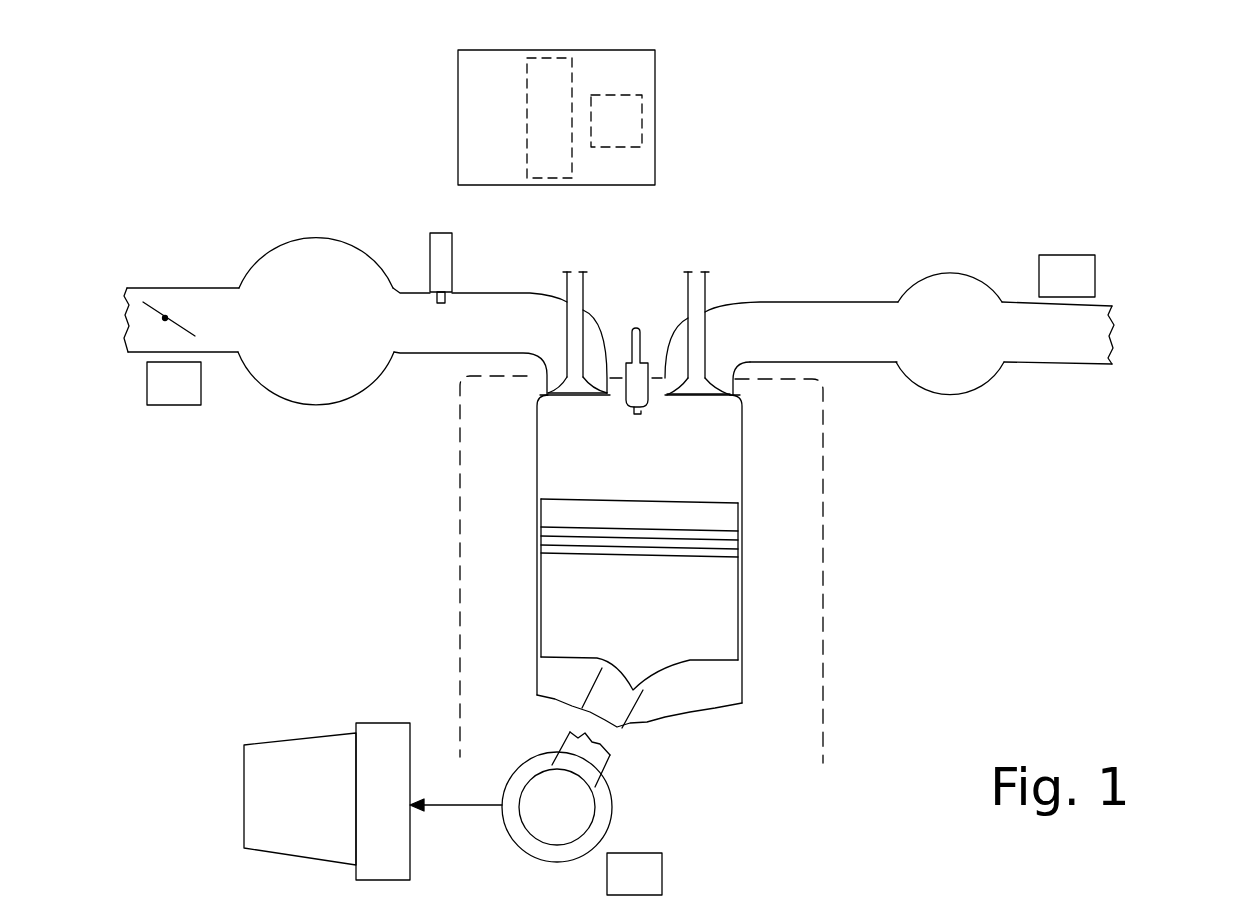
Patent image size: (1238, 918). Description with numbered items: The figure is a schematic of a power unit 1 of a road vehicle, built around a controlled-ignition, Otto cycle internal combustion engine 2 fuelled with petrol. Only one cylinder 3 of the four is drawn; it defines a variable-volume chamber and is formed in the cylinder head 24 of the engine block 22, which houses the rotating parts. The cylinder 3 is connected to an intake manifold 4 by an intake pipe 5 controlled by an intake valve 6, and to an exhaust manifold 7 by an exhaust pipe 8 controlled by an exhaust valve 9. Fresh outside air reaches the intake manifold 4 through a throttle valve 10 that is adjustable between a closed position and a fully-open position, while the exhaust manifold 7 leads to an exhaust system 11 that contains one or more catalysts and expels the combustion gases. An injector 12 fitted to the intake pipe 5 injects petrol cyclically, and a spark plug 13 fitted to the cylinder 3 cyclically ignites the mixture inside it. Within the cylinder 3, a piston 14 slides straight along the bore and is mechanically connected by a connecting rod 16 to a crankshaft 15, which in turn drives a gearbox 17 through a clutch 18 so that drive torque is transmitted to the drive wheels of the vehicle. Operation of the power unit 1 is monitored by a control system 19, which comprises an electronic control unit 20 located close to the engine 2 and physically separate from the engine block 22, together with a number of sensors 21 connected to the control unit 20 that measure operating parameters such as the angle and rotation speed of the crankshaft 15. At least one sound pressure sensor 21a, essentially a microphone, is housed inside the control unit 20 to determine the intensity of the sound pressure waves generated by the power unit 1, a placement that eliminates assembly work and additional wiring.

The power unit 1 is at (770, 559).
The internal combustion engine 2 is at (373, 417).
The cylinder 3 is at (737, 461).
The intake manifold 4 is at (314, 405).
The intake pipe 5 is at (423, 347).
The intake valve 6 is at (566, 286).
The exhaust manifold 7 is at (949, 395).
The exhaust pipe 8 is at (787, 310).
The exhaust valve 9 is at (705, 290).
The throttle valve 10 is at (165, 318).
The exhaust system 11 is at (1088, 362).
The injector 12 is at (440, 243).
The spark plug 13 is at (638, 335).
The piston 14 is at (735, 640).
The crankshaft 15 is at (580, 808).
The connecting rod 16 is at (620, 705).
The gearbox 17 is at (278, 748).
The clutch 18 is at (381, 730).
The control system 19 is at (613, 117).
The control unit 20 is at (560, 129).
The sensor 21 is at (187, 396).
The sound pressure sensor 21a is at (632, 134).
The engine block 22 is at (940, 571).
The cylinder head 24 is at (823, 547).